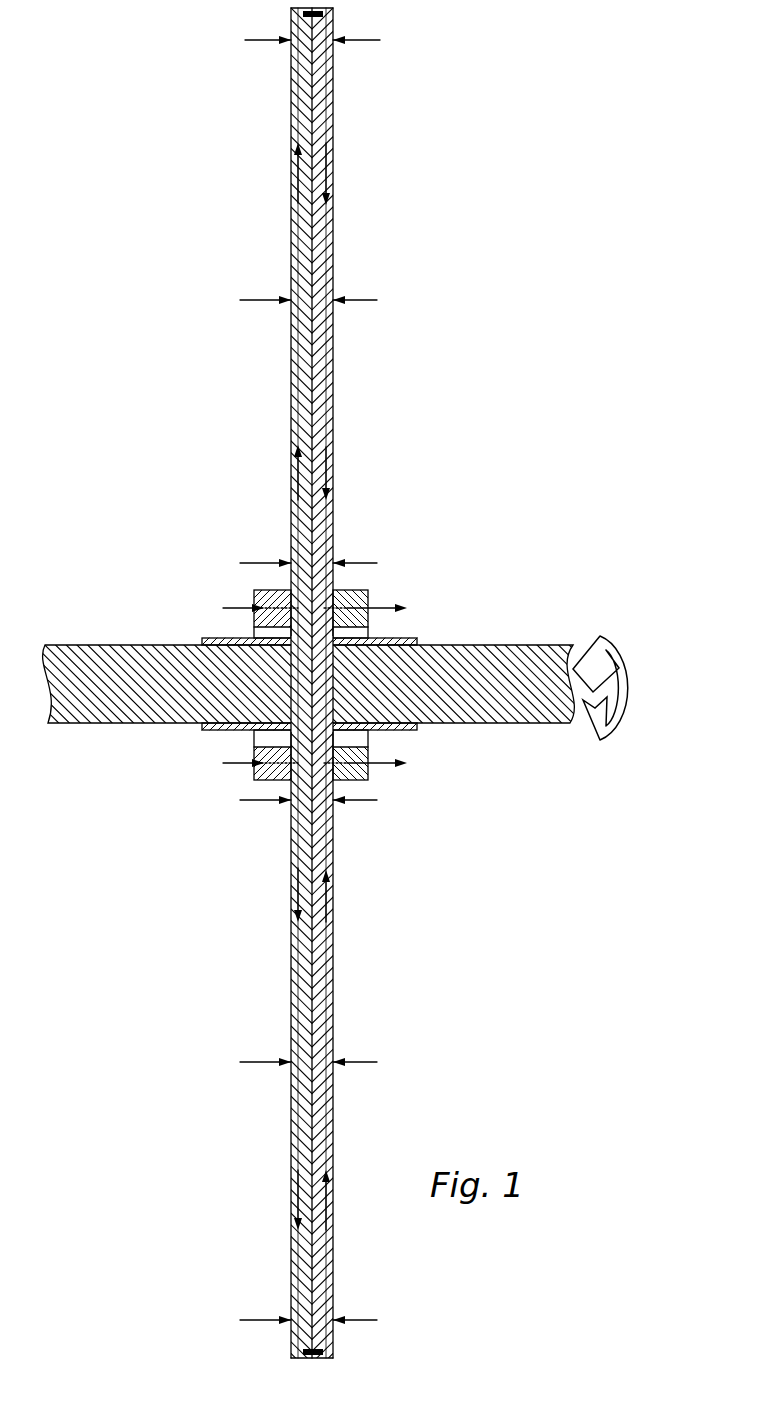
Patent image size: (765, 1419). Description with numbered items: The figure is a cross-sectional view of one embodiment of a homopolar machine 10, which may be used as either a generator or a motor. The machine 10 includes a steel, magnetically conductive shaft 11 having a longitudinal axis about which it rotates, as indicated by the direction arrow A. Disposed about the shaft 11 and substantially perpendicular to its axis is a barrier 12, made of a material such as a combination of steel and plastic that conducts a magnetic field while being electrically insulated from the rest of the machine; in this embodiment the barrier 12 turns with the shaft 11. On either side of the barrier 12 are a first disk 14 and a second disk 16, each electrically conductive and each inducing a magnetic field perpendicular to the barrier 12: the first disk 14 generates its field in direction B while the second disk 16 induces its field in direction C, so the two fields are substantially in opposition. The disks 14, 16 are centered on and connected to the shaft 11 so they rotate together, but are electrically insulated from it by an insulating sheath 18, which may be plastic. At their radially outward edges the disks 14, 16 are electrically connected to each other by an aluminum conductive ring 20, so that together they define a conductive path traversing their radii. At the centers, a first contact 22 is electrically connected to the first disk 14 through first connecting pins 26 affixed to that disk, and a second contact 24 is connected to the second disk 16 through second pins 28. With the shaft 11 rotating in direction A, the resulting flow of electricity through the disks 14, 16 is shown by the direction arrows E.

The homopolar machine 10 is at (338, 687).
The shaft 11 is at (492, 645).
The barrier 12 is at (319, 687).
The first disk 14 is at (300, 110).
The second disk 16 is at (322, 110).
The insulating sheath 18 is at (420, 640).
The electrically conductive ring 20 is at (314, 12).
The first contact 22 is at (242, 656).
The second contact 24 is at (381, 656).
The first connecting pins 26 is at (268, 590).
The second pins 28 is at (352, 590).
The direction arrow A is at (624, 688).
The direction of magnetic field of first disk B is at (256, 41).
The direction of magnetic field of second disk C is at (365, 41).
The direction arrows for electricity flow E is at (322, 478).